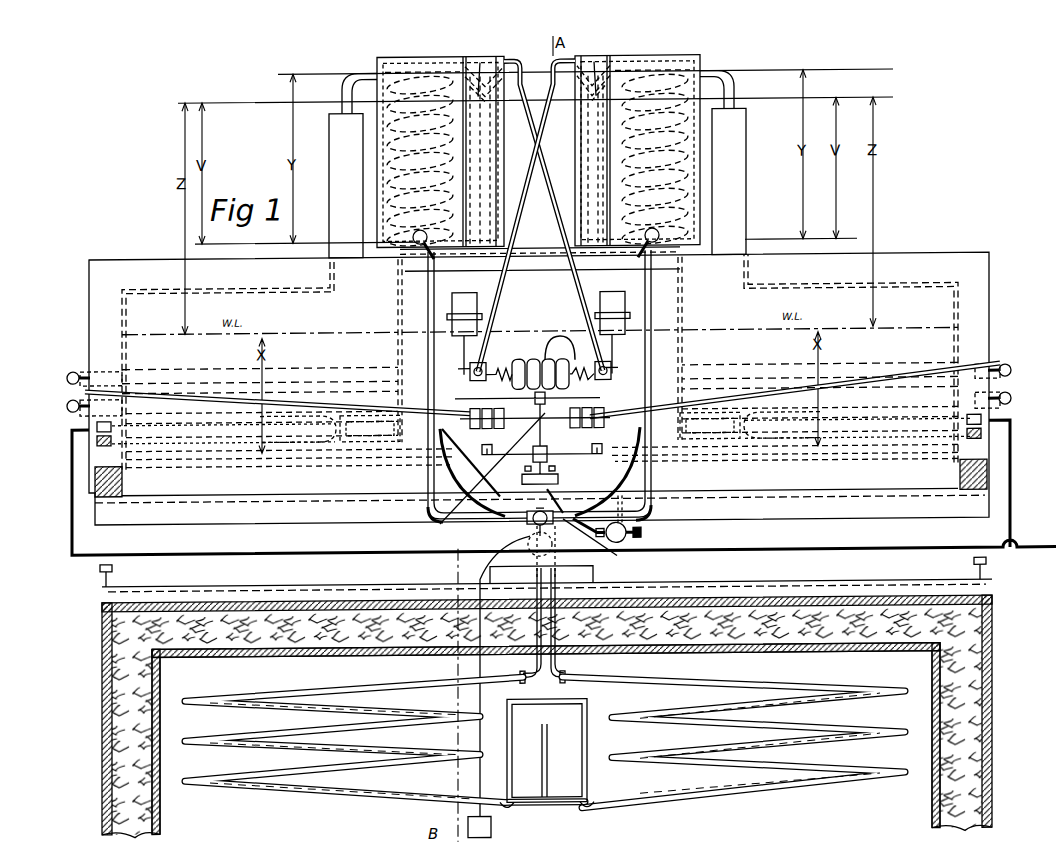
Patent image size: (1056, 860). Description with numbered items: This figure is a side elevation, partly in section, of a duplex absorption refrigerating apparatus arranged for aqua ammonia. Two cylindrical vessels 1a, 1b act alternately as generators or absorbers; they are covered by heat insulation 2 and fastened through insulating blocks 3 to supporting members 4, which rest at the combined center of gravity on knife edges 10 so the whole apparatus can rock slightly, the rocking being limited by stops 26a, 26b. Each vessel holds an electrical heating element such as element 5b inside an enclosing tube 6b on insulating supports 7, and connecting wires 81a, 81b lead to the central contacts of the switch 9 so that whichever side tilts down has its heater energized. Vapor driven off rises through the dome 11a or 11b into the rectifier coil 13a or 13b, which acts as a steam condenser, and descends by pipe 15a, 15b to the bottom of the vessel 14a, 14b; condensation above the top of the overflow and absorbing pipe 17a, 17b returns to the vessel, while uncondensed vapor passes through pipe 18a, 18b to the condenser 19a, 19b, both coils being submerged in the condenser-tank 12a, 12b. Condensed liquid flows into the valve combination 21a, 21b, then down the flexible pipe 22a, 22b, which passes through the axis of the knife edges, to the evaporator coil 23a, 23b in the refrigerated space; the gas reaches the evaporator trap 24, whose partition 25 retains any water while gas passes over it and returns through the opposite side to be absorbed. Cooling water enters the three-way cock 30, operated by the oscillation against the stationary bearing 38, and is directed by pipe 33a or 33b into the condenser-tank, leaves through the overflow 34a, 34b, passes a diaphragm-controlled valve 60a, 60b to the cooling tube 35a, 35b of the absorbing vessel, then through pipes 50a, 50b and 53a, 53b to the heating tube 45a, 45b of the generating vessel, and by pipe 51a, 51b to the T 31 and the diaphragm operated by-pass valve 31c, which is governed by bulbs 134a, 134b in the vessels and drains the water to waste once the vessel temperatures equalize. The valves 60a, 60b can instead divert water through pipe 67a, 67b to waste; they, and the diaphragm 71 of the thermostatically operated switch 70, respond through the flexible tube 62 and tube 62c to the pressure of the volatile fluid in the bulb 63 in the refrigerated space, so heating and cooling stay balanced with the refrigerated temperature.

The cylindrical vessel 1a is at (122, 306).
The cylindrical vessel 1b is at (960, 300).
The heat insulation 2 is at (130, 260).
The insulating block 3 is at (95, 490).
The supporting member 4 is at (150, 522).
The electrical heating element 5b is at (92, 426).
The enclosing tube 6b is at (122, 445).
The insulating support 7 is at (97, 440).
The switch 9 is at (530, 476).
The knife edge 10 is at (599, 542).
The dome 11a is at (329, 192).
The dome 11b is at (741, 176).
The condenser-tank 12a is at (374, 98).
The condenser-tank 12b is at (706, 90).
The rectifier coil 13a is at (378, 66).
The rectifier coil 13b is at (700, 70).
The vessel 14a is at (504, 214).
The vessel 14b is at (575, 214).
The pipe 15a is at (480, 150).
The pipe 15b is at (595, 148).
The overflow and absorbing pipe 17a is at (484, 172).
The overflow and absorbing pipe 17b is at (588, 168).
The pipe 18a is at (482, 66).
The pipe 18b is at (605, 70).
The condenser 19a is at (380, 140).
The condenser coil 19b is at (700, 138).
The combination of valves 21a is at (446, 298).
The valve combination 21b is at (612, 322).
The flexible pipe 22a is at (440, 340).
The flexible pipe 22b is at (636, 340).
The evaporator coil 23a is at (270, 700).
The evaporator coil 23b is at (745, 690).
The evaporator trap 24 is at (536, 808).
The septum or partition 25 is at (548, 748).
The stop 26a is at (100, 570).
The stop 26b is at (988, 568).
The three-way cock 30 is at (530, 528).
The T 31 is at (486, 368).
The diaphragm operated water by-pass valve 31c is at (440, 527).
The pipe 33a is at (432, 516).
The pipe 33b is at (656, 514).
The overflow 34a is at (425, 68).
The overflow 34b is at (660, 68).
The cooling tube 35a is at (202, 378).
The cooling tube 35b is at (756, 366).
The bearing 38 is at (527, 565).
The heating tube 45a is at (352, 392).
The heating tube 45b is at (690, 388).
The pipe 50a is at (130, 384).
The pipe 50b is at (850, 372).
The left pivot 51a is at (486, 368).
The right pivot 51b is at (612, 372).
The pipe 53a is at (175, 446).
The pipe 53b is at (804, 442).
The diaphragm-controlled valve 60a is at (528, 348).
The diaphragm-controlled valve 60b is at (578, 360).
The flexible tube 62 is at (504, 778).
The tube 62c is at (616, 508).
The bulb 63 is at (491, 834).
The pipe 67a is at (492, 442).
The pipe 67b is at (592, 458).
The thermostatically operated switch 70 is at (640, 546).
The diaphragm 71 is at (640, 534).
The connecting wire 81a is at (485, 476).
The connecting wire 81b is at (608, 460).
The bulb 134a is at (352, 452).
The bulb 134b is at (720, 440).